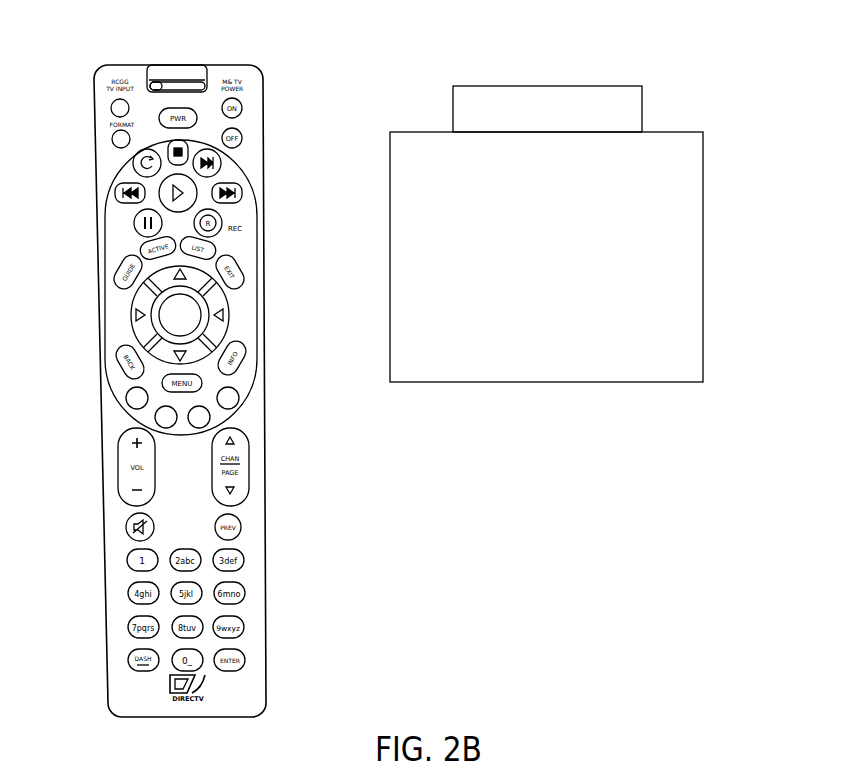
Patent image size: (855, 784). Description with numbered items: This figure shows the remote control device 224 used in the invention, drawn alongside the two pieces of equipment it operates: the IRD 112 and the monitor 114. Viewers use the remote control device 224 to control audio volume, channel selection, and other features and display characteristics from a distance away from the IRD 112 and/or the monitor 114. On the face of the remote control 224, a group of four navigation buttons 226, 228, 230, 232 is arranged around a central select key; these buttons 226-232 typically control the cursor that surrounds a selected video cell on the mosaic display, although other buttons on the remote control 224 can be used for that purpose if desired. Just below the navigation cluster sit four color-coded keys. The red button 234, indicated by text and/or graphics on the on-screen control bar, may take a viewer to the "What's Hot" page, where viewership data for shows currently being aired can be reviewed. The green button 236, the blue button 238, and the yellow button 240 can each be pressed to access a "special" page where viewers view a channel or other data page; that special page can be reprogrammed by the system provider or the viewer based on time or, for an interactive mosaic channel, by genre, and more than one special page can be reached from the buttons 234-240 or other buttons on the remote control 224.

The IRD 112 is at (546, 86).
The monitor 114 is at (703, 258).
The remote control device 224 is at (175, 62).
The button 226 is at (200, 283).
The button 228 is at (216, 309).
The button 230 is at (178, 355).
The button 232 is at (140, 321).
The red button 234 is at (134, 399).
The green button 236 is at (162, 419).
The blue button 238 is at (226, 400).
The yellow button 240 is at (204, 415).